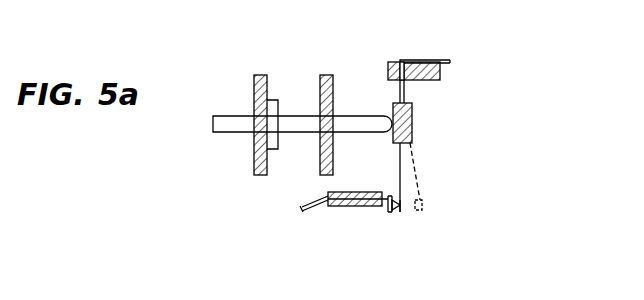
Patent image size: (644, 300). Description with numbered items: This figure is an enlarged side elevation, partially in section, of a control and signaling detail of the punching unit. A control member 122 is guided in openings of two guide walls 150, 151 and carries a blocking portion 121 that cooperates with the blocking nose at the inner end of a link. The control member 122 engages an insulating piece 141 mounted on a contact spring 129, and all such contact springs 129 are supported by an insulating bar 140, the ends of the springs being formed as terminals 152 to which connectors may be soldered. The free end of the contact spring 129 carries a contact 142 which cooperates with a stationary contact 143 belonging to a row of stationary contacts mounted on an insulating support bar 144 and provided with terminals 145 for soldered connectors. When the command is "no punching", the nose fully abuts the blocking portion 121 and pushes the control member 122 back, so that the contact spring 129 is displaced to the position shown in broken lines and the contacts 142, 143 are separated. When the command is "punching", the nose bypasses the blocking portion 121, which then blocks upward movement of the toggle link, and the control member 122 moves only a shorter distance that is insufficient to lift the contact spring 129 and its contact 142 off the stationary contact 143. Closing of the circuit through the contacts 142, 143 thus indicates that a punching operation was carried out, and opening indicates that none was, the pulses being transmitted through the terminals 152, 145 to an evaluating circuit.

The blocking portion 121 is at (220, 116).
The control member 122 is at (292, 150).
The contact spring 129 is at (398, 90).
The insulating bar 140 is at (441, 80).
The insulating piece 141 is at (412, 127).
The contact 142 is at (397, 212).
The stationary contact 143 is at (393, 212).
The insulating support bar 144 is at (342, 208).
The terminal 145 is at (302, 211).
The guide wall 150 is at (260, 75).
The guide wall 151 is at (325, 75).
The terminal 152 is at (450, 61).